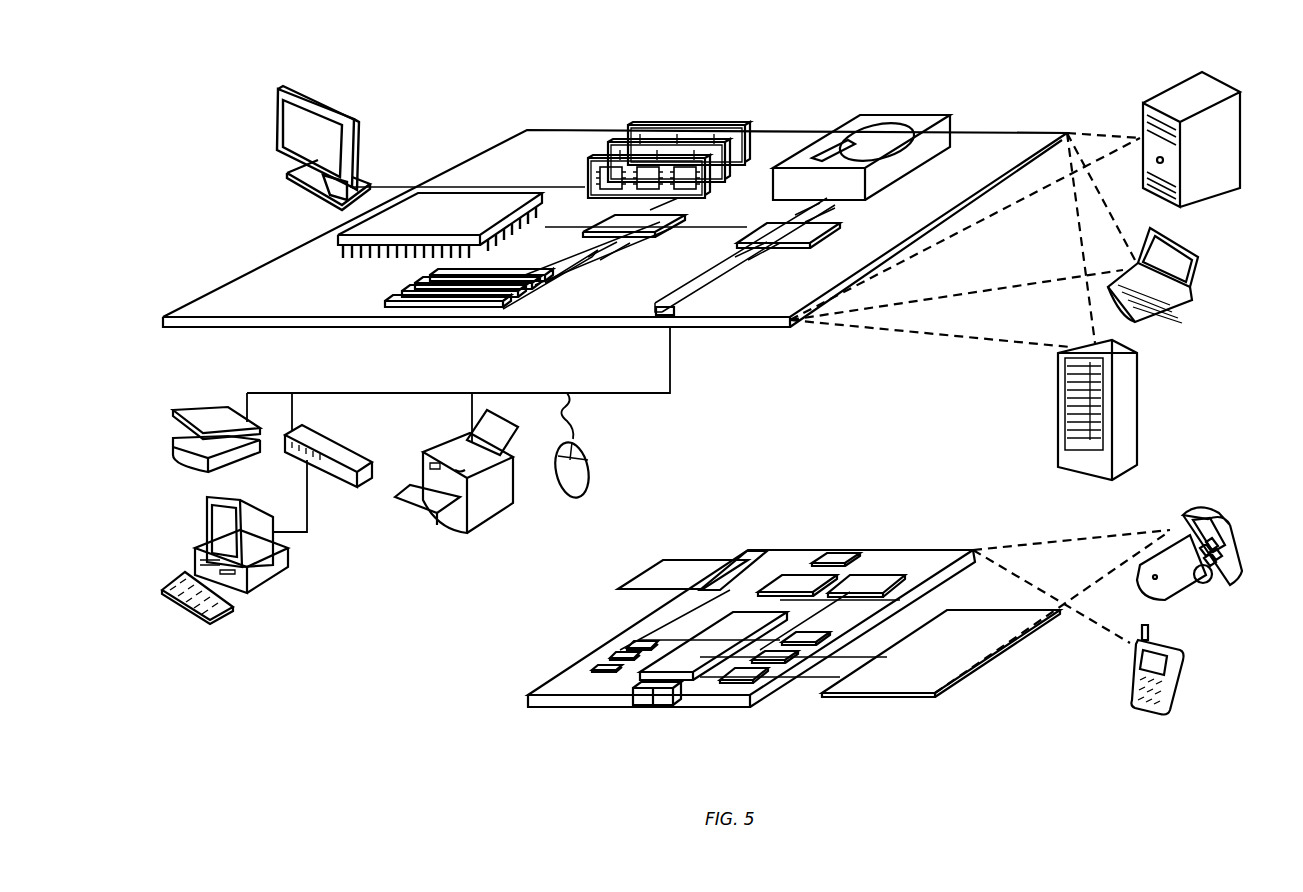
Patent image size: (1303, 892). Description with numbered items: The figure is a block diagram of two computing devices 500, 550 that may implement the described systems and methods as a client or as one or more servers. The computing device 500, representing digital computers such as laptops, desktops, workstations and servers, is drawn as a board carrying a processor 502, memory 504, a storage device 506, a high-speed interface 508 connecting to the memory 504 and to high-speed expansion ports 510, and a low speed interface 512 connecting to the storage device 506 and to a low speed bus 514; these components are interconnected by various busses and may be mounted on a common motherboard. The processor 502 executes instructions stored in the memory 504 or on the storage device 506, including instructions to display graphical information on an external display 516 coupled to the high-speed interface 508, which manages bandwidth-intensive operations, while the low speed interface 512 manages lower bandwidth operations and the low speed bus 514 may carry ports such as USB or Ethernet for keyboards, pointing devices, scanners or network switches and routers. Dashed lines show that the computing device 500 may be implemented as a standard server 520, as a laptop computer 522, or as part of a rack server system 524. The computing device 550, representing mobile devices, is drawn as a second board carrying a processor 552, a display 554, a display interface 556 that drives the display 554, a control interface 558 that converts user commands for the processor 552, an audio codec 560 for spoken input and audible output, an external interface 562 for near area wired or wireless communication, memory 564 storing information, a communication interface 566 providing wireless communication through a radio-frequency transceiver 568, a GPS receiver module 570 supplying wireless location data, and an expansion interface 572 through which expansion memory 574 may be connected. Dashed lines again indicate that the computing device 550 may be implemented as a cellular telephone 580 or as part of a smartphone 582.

The computing device 500 is at (457, 106).
The processor 502 is at (340, 238).
The memory 504 is at (640, 128).
The storage device 506 is at (858, 126).
The high-speed interface 508 is at (604, 225).
The high-speed expansion ports 510 is at (400, 297).
The low speed interface 512 is at (770, 226).
The low speed bus 514 is at (678, 326).
The display 516 is at (282, 86).
The standard server 520 is at (1143, 122).
The laptop computer 522 is at (1202, 253).
The rack server system 524 is at (1060, 430).
The computing device 550 is at (505, 703).
The processor 552 is at (688, 665).
The display 554 is at (904, 689).
The display interface 556 is at (752, 672).
The control interface 558 is at (778, 659).
The audio codec 560 is at (804, 637).
The external interface 562 is at (655, 702).
The memory 564 is at (612, 665).
The communication interface 566 is at (800, 585).
The transceiver 568 is at (869, 587).
The GPS receiver module 570 is at (839, 558).
The expansion interface 572 is at (726, 574).
The expansion memory 574 is at (665, 572).
The cellular telephone 580 is at (1186, 513).
The smartphone 582 is at (1132, 678).